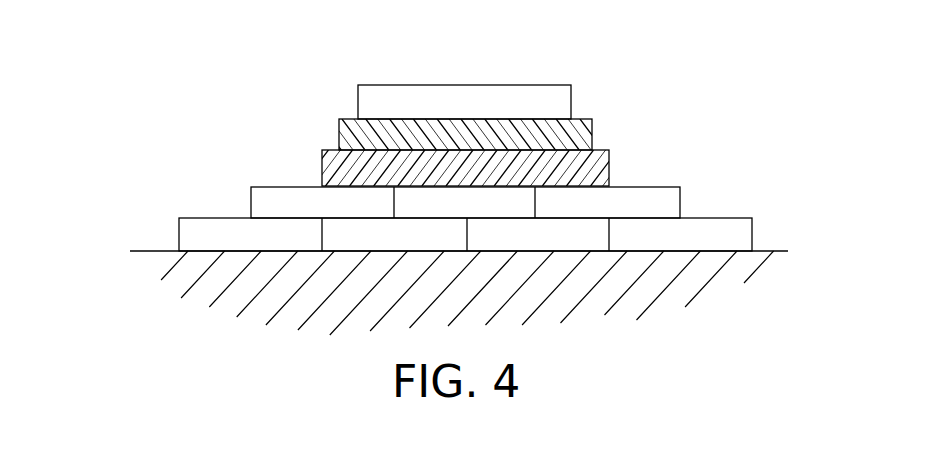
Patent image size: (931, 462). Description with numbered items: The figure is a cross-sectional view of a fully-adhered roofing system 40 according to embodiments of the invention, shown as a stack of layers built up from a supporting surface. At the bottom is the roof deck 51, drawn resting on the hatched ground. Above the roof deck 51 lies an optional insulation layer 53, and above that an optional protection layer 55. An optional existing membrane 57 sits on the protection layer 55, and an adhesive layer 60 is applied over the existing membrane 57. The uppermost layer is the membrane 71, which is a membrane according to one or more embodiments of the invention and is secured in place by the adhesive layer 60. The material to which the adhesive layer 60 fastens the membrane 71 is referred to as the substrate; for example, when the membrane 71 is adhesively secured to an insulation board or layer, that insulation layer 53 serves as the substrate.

The roofing system 40 is at (198, 95).
The roof deck 51 is at (162, 260).
The insulation layer 53 is at (179, 240).
The protection layer 55 is at (251, 202).
The existing membrane 57 is at (322, 170).
The adhesive layer 60 is at (591, 133).
The membrane 71 is at (537, 85).